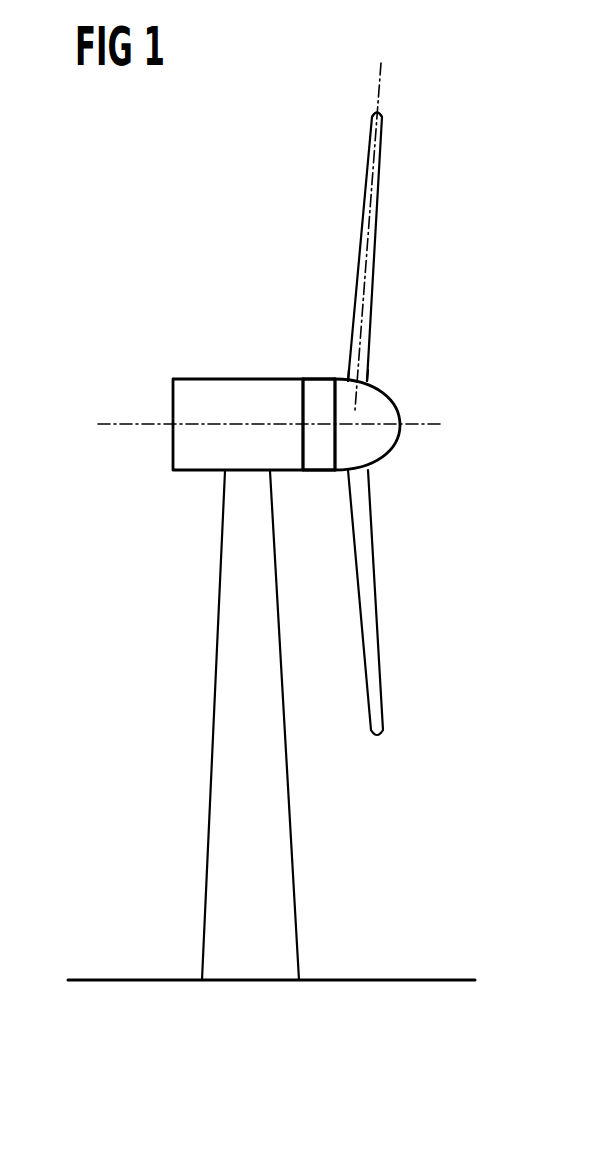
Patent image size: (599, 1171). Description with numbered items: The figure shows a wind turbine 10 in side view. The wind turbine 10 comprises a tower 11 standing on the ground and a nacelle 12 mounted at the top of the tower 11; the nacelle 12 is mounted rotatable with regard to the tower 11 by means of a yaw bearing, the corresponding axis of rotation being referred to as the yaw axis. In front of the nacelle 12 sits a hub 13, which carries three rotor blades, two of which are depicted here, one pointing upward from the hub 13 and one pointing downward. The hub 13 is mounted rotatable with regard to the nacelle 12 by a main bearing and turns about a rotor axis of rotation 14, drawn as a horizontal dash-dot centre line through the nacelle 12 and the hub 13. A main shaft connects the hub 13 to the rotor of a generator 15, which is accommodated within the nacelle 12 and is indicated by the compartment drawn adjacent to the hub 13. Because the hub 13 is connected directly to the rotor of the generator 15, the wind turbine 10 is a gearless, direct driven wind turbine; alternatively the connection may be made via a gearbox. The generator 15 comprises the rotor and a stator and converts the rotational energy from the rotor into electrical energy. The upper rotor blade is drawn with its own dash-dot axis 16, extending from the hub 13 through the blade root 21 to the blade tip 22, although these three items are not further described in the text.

The wind turbine 10 is at (143, 611).
The tower 11 is at (270, 810).
The nacelle 12 is at (224, 378).
The hub 13 is at (393, 402).
The rotor axis of rotation 14 is at (115, 424).
The generator 15 is at (320, 457).
The pitch axis 16 is at (380, 79).
The blade root 21 is at (370, 350).
The blade tip 22 is at (385, 128).